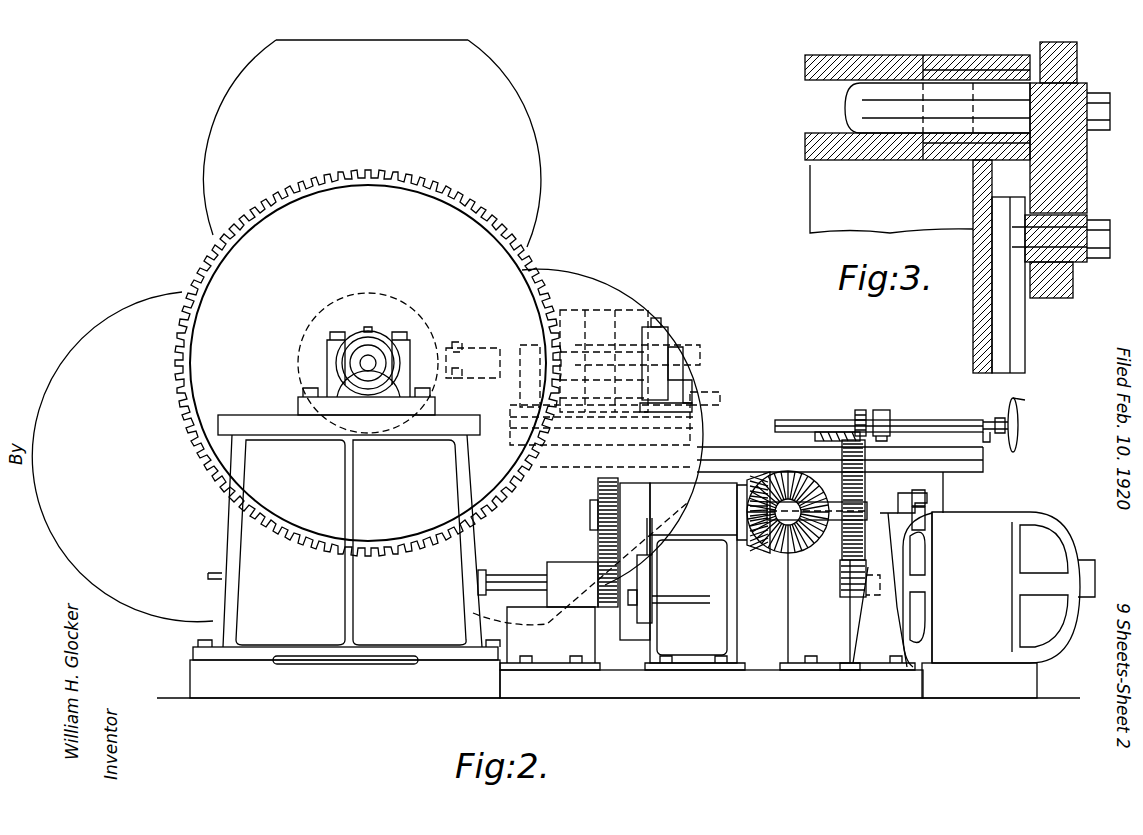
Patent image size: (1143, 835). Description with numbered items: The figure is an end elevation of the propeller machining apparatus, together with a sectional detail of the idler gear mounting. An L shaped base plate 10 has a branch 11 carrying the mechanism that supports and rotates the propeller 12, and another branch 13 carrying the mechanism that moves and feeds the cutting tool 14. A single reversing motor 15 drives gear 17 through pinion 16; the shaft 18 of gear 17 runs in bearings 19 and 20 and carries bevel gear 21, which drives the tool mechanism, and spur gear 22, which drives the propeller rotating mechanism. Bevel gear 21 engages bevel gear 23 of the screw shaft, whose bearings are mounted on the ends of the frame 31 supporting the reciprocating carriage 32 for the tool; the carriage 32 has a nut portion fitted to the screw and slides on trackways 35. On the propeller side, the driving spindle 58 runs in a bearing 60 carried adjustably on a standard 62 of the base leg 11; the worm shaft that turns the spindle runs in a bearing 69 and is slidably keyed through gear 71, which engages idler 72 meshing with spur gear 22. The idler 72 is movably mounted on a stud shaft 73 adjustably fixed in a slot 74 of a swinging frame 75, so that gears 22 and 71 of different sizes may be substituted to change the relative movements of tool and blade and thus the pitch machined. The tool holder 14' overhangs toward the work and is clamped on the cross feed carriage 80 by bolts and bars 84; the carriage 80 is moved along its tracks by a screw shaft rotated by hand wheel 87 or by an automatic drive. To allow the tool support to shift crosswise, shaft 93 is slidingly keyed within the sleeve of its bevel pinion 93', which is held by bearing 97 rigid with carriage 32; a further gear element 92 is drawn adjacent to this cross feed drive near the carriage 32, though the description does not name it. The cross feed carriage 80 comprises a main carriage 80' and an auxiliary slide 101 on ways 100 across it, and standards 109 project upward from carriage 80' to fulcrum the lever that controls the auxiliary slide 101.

In FIG. 2, the L shaped base plate 10 is at (770, 688).
In FIG. 2, the branch 11 is at (336, 683).
In FIG. 2, the propeller 12 is at (515, 170).
In FIG. 2, the branch 13 is at (1020, 687).
In FIG. 2, the cutting tool 14 is at (473, 347).
In FIG. 2, the tool holder 14' is at (605, 371).
In FIG. 2, the motor 15 is at (999, 589).
In FIG. 2, the pinion 16 is at (847, 598).
In FIG. 2, the gear 17 is at (884, 506).
In FIG. 2, the shaft 18 is at (828, 500).
In FIG. 3, the shaft 18 is at (893, 113).
In FIG. 2, the bearing 19 is at (905, 505).
In FIG. 2, the bearing 20 is at (695, 576).
In FIG. 3, the bearing 20 is at (810, 65).
In FIG. 2, the bevel gear 21 is at (757, 548).
In FIG. 2, the spur gear 22 is at (598, 487).
In FIG. 3, the spur gear 22 is at (1063, 157).
In FIG. 2, the bevel gear 23 is at (797, 553).
In FIG. 2, the frame 31 is at (920, 512).
In FIG. 2, the reciprocating carriage 32 is at (985, 472).
In FIG. 2, the trackways 35 is at (927, 496).
In FIG. 2, the driving spindle 58 is at (368, 363).
In FIG. 2, the bearing 60 is at (427, 407).
In FIG. 2, the standard 62 is at (346, 539).
In FIG. 2, the bearing 69 is at (566, 563).
In FIG. 2, the gear 71 is at (608, 606).
In FIG. 2, the idler 72 is at (597, 576).
In FIG. 3, the idler 72 is at (1053, 292).
In FIG. 3, the stud shaft 73 is at (1080, 285).
In FIG. 3, the slot 74 is at (1000, 353).
In FIG. 2, the swinging frame 75 is at (637, 496).
In FIG. 3, the swinging frame 75 is at (978, 305).
In FIG. 2, the cross feed carriage 80 is at (695, 389).
In FIG. 2, the main carriage 80' is at (724, 400).
In FIG. 2, the bars 84 is at (685, 348).
In FIG. 2, the hand wheel 87 is at (1022, 406).
In FIG. 2, the gear 92 is at (818, 441).
In FIG. 2, the shaft 93 is at (879, 410).
In FIG. 2, the bevel pinion 93' is at (859, 408).
In FIG. 2, the bearing 97 is at (888, 412).
In FIG. 2, the ways 100 is at (690, 373).
In FIG. 2, the auxiliary slide 101 is at (647, 327).
In FIG. 2, the standards 109 is at (527, 337).